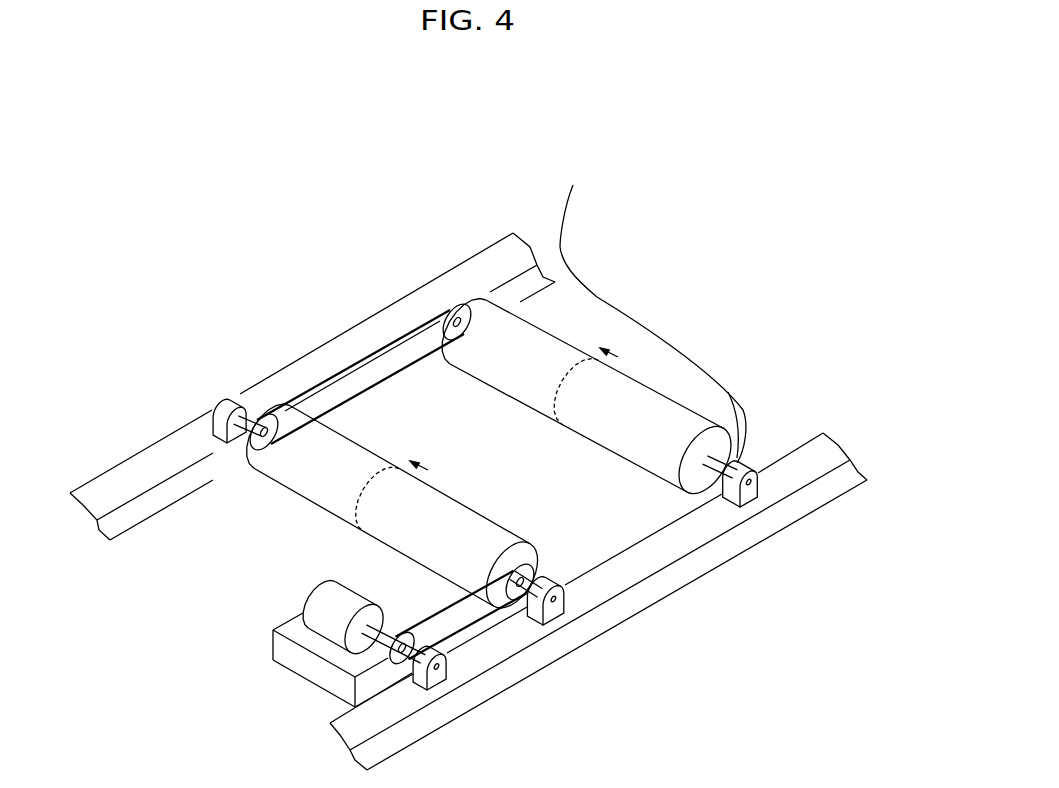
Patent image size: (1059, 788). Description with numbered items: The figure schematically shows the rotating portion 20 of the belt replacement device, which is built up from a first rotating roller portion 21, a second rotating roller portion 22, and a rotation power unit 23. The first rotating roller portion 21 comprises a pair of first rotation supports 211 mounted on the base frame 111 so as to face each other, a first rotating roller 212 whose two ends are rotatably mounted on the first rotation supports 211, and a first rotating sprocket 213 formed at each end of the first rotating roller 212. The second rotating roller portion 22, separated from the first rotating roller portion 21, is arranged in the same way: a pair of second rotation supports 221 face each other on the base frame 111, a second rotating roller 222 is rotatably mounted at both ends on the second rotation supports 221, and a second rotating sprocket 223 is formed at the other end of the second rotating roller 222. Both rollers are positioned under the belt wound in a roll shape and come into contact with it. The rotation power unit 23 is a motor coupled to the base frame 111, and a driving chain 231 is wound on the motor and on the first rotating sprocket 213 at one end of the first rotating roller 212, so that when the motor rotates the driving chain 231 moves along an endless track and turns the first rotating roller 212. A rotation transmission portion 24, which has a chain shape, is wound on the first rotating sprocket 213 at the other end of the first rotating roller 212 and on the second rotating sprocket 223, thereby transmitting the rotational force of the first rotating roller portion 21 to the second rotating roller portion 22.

The rotating portion 20 is at (816, 115).
The base frame 111 is at (147, 470).
The first rotating roller portion 21 is at (253, 288).
The first rotation supports 211 is at (220, 407).
The first rotating roller 212 is at (315, 443).
The first rotating sprocket 213 is at (270, 412).
The second rotating roller portion 22 is at (587, 153).
The second rotation supports 221 is at (650, 308).
The second rotating roller 222 is at (530, 342).
The second rotating sprocket 223 is at (460, 304).
The rotation transmission portion 24 is at (423, 318).
The rotation power unit 23 is at (343, 630).
The driving chain 231 is at (470, 630).